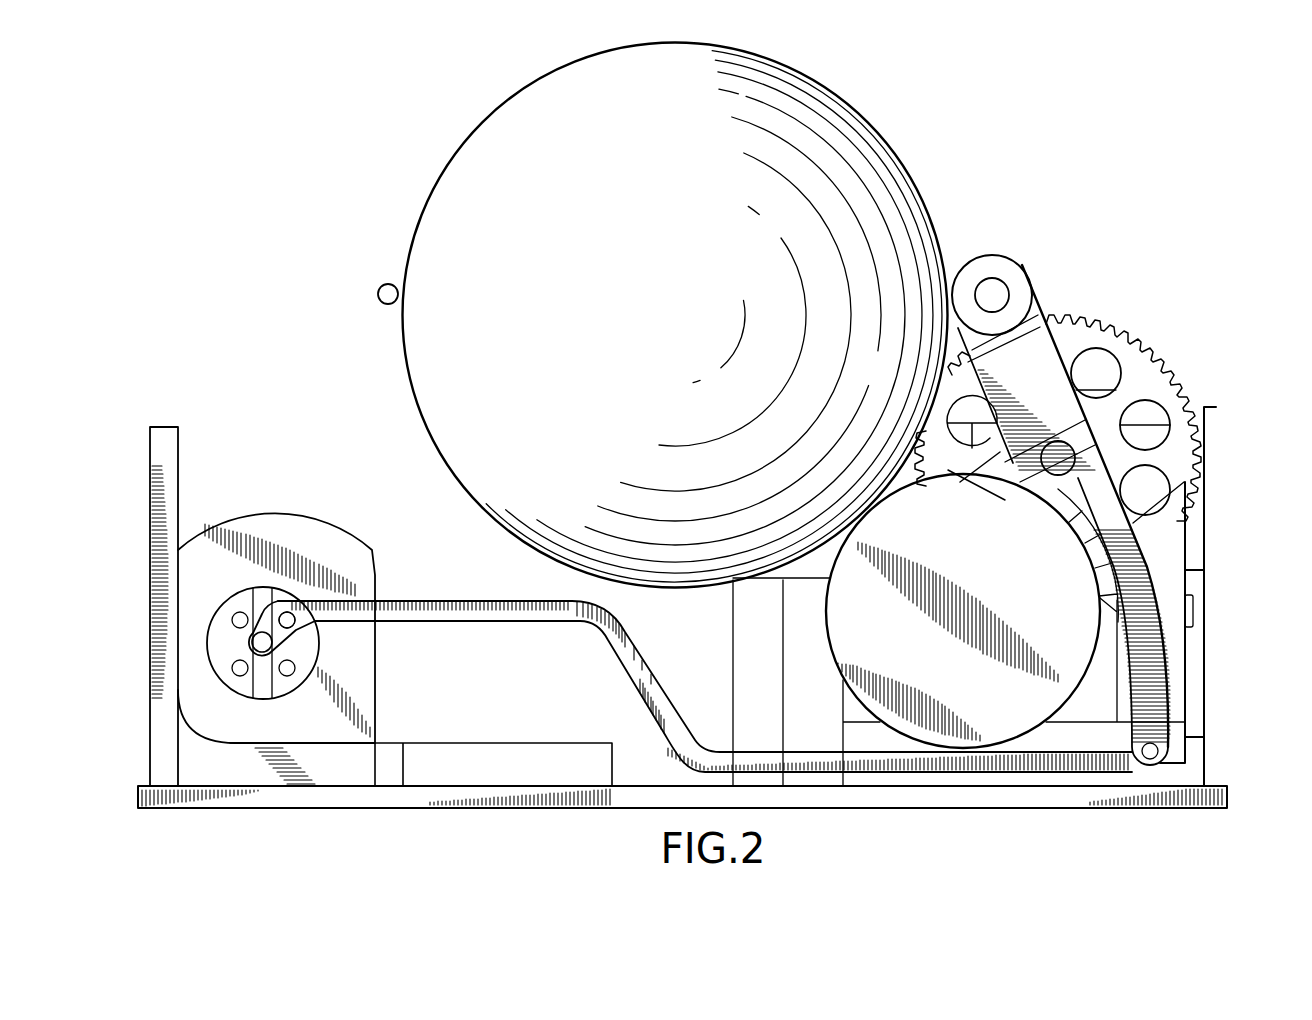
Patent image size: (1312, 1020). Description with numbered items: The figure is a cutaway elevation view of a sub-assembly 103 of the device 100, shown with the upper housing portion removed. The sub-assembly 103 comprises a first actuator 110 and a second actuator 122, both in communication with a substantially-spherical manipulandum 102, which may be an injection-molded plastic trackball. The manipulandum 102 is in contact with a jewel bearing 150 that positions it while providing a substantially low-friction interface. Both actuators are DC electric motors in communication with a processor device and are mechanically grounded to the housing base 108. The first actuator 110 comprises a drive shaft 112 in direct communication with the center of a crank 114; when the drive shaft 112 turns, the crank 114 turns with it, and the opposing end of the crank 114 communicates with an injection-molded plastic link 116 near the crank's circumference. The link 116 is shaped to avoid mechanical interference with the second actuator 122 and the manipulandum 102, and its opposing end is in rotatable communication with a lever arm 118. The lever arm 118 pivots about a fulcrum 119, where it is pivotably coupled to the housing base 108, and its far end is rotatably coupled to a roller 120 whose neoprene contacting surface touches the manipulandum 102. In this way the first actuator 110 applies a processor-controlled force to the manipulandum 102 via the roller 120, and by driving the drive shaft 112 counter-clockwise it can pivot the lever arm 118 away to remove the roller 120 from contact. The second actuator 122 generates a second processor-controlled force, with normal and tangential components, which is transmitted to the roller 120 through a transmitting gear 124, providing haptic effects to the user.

The device 100 is at (1152, 165).
The substantially-spherical manipulandum 102 is at (866, 112).
The sub-assembly 103 is at (359, 466).
The housing base 108 is at (435, 760).
The first actuator 110 is at (266, 524).
The drive shaft 112 is at (256, 643).
The crank 114 is at (240, 603).
The link 116 is at (422, 607).
The lever arm 118 is at (1045, 354).
The fulcrum 119 is at (1066, 458).
The roller 120 is at (1006, 256).
The second actuator 122 is at (1050, 585).
The transmitting gear 124 is at (1162, 398).
The jewel bearing 150 is at (378, 293).